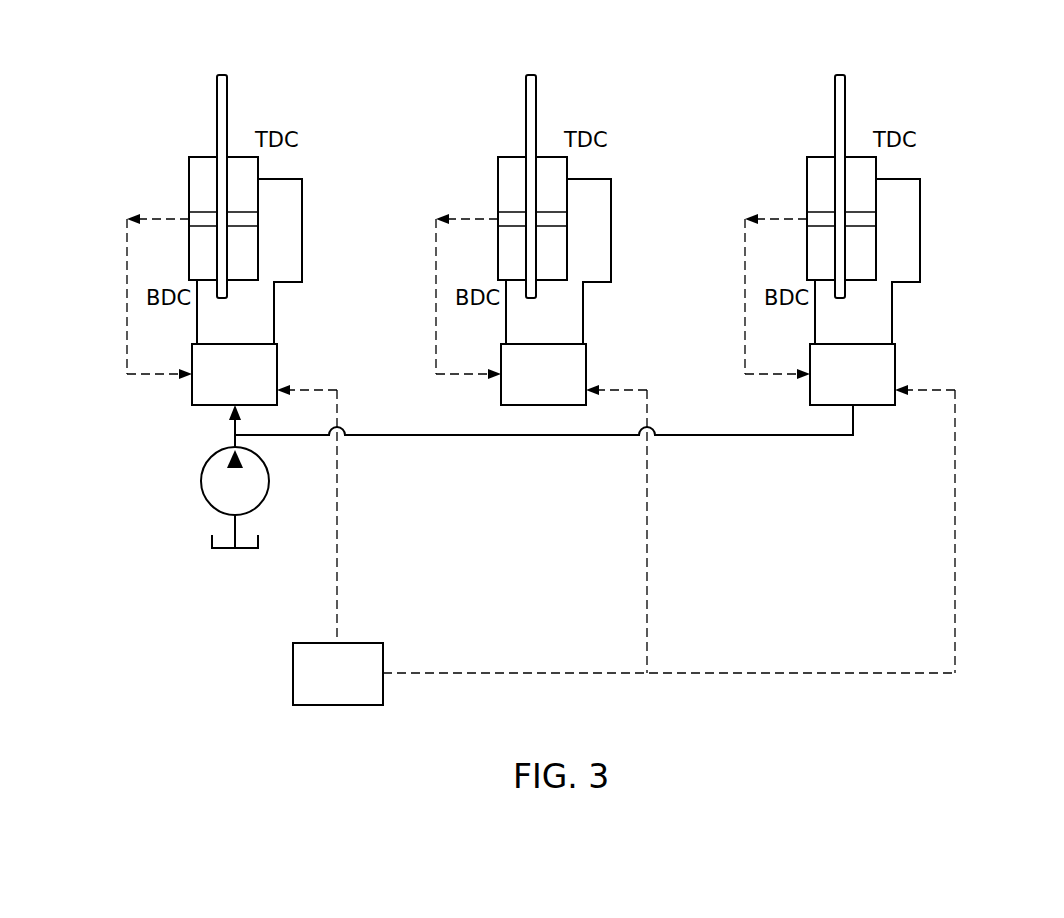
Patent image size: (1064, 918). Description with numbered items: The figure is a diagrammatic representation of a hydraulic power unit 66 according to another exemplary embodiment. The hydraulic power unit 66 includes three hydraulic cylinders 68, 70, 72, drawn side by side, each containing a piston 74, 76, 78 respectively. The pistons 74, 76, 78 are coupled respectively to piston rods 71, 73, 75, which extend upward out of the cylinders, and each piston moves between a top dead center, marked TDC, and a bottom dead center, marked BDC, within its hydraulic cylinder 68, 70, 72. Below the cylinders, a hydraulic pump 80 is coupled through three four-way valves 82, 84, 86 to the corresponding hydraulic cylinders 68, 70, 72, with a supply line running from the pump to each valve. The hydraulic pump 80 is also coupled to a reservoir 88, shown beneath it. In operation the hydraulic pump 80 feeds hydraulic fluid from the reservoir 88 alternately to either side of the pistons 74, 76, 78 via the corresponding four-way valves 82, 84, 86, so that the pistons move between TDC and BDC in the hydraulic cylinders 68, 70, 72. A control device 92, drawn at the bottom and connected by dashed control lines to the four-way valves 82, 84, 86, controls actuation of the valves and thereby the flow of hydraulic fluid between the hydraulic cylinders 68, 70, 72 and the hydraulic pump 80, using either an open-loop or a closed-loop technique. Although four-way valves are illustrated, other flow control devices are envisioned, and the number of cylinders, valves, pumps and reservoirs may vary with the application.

The hydraulic power unit 66 is at (950, 82).
The hydraulic cylinder 68 is at (189, 182).
The hydraulic cylinder 70 is at (501, 218).
The hydraulic cylinder 72 is at (810, 218).
The piston rod 71 is at (217, 108).
The piston rod 73 is at (500, 186).
The piston rod 75 is at (809, 186).
The piston 74 is at (200, 215).
The piston 76 is at (509, 207).
The piston 78 is at (818, 207).
The hydraulic pump 80 is at (262, 458).
The four-way valve 82 is at (278, 356).
The four-way valve 84 is at (577, 373).
The four-way valve 86 is at (886, 373).
The reservoir 88 is at (258, 538).
The control device 92 is at (360, 643).